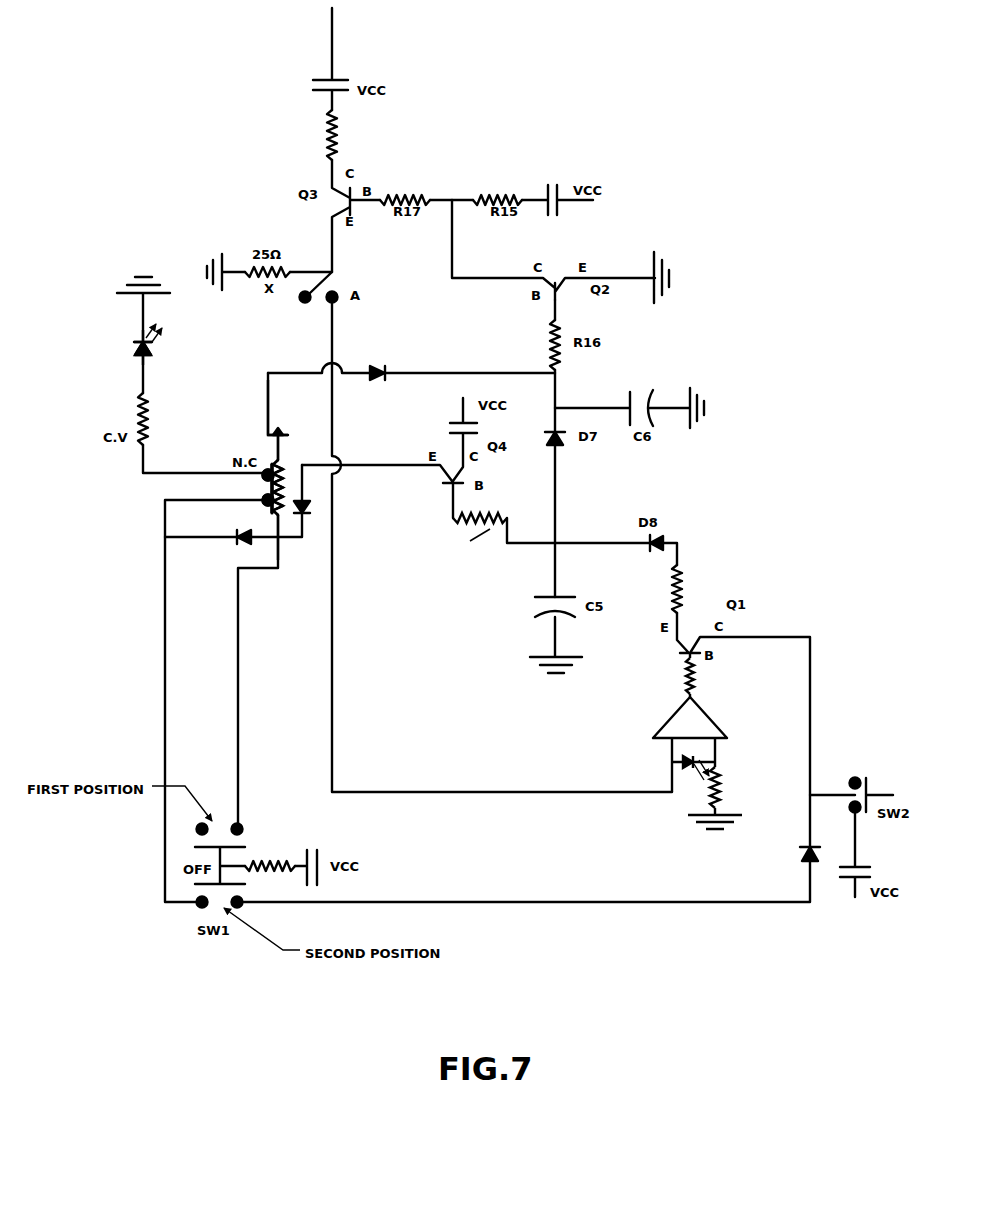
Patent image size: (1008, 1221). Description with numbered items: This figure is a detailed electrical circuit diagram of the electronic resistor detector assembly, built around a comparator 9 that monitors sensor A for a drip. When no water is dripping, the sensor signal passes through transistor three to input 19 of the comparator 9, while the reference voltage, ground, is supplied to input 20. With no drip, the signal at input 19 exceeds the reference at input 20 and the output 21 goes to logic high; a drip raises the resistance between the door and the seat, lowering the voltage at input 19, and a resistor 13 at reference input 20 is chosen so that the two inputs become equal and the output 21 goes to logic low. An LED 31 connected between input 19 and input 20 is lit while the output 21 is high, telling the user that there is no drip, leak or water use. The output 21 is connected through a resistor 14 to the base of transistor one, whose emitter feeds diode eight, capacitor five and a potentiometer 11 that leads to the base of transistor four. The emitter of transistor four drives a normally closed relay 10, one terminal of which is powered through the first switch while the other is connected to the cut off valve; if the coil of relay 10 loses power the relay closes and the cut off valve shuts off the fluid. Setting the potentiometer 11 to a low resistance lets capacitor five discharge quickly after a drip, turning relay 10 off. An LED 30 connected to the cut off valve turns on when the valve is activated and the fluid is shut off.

The comparator 9 is at (690, 717).
The relay 10 is at (265, 488).
The potentiometer 11 is at (505, 489).
The resistor 13 is at (723, 810).
The resistor 14 is at (680, 672).
The input of comparator 19 is at (658, 765).
The reference input of comparator 20 is at (726, 754).
The output of comparator 21 is at (698, 695).
The LED 30 is at (105, 347).
The LED 31 is at (683, 773).